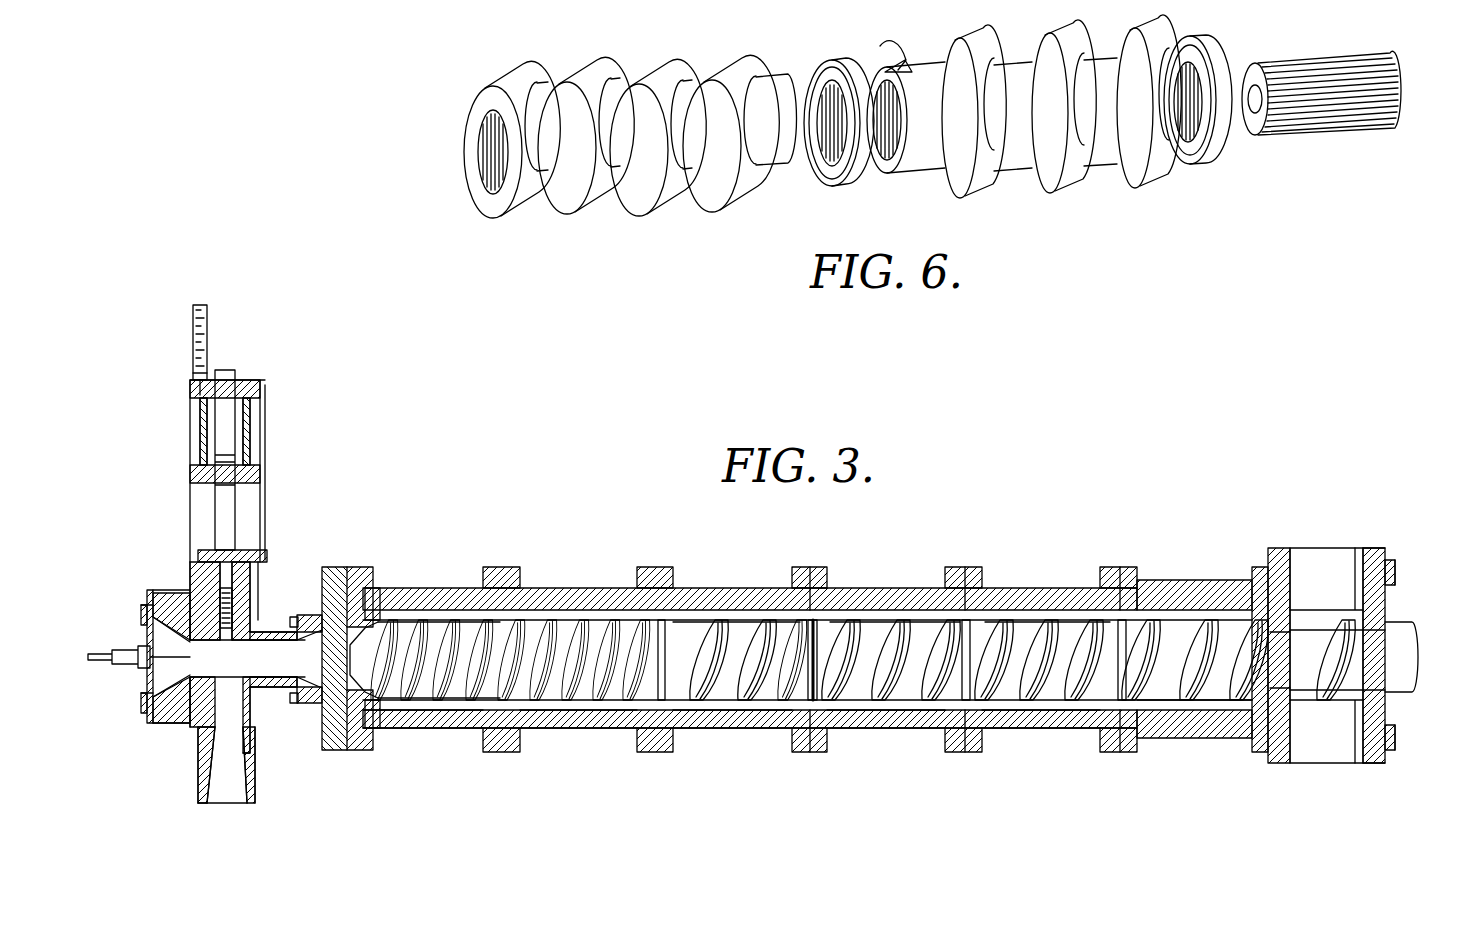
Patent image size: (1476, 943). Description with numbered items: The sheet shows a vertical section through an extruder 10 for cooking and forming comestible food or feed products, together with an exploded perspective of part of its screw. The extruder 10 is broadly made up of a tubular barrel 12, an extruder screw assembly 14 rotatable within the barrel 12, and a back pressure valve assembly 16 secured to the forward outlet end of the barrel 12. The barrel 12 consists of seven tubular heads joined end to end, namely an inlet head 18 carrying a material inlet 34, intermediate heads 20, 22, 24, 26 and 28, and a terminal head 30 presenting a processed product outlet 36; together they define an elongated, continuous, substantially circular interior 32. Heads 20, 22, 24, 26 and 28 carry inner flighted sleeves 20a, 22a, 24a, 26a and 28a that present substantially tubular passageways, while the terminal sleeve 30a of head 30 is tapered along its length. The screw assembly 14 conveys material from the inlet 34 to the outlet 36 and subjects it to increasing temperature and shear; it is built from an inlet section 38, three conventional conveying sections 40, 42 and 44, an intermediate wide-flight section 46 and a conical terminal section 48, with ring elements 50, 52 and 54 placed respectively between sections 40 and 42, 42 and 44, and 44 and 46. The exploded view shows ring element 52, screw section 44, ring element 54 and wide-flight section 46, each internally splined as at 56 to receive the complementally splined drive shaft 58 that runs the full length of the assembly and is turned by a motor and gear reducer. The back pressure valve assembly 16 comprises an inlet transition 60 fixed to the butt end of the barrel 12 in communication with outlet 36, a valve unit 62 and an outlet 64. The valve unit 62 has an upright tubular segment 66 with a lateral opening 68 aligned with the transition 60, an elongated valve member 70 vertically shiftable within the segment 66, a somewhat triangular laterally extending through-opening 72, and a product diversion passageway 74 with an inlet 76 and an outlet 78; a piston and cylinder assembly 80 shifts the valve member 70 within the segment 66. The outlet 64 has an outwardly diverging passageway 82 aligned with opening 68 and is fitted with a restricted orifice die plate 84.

In FIG. 3, the extruder 10 is at (1243, 488).
In FIG. 3, the tubular barrel 12 is at (1114, 533).
In FIG. 3, the extruder screw assembly 14 is at (1024, 600).
In FIG. 3, the back pressure valve assembly 16 is at (302, 468).
In FIG. 3, the inlet head 18 is at (1318, 725).
In FIG. 3, the tubular head 20 is at (1228, 738).
In FIG. 3, the inner flighted sleeve 20a is at (1150, 720).
In FIG. 3, the tubular head 22 is at (1067, 730).
In FIG. 3, the inner flighted sleeve 22a is at (1035, 712).
In FIG. 3, the tubular head 24 is at (895, 722).
In FIG. 3, the inner flighted sleeve 24a is at (866, 712).
In FIG. 3, the tubular head 26 is at (765, 722).
In FIG. 3, the inner flighted sleeve 26a is at (724, 712).
In FIG. 3, the tubular head 28 is at (610, 728).
In FIG. 3, the inner flighted sleeve 28a is at (552, 712).
In FIG. 3, the terminal head 30 is at (455, 728).
In FIG. 3, the terminal sleeve 30a is at (380, 712).
In FIG. 3, the interior 32 is at (1235, 605).
In FIG. 3, the material inlet 34 is at (1340, 552).
In FIG. 3, the processed product outlet 36 is at (340, 645).
In FIG. 3, the inlet section 38 is at (1305, 635).
In FIG. 3, the conveying section 40 is at (1057, 640).
In FIG. 3, the conveying section 42 is at (918, 640).
In FIG. 6, the conveying section 44 is at (1017, 78).
In FIG. 3, the conveying section 44 is at (728, 640).
In FIG. 6, the intermediate wide-flight section 46 is at (602, 65).
In FIG. 3, the intermediate wide-flight section 46 is at (572, 635).
In FIG. 3, the conical terminal or outlet section 48 is at (405, 640).
In FIG. 3, the ring element 50 is at (966, 680).
In FIG. 6, the ring element 52 is at (850, 175).
In FIG. 3, the ring element 52 is at (828, 635).
In FIG. 6, the ring element 54 is at (1212, 52).
In FIG. 6, the internal splines 56 is at (1180, 137).
In FIG. 6, the splined drive shaft 58 is at (1367, 120).
In FIG. 3, the splined drive shaft 58 is at (1402, 648).
In FIG. 3, the inlet transition 60 is at (280, 685).
In FIG. 3, the valve unit 62 is at (318, 572).
In FIG. 3, the outlet 64 is at (170, 590).
In FIG. 3, the upright tubular segment 66 is at (296, 612).
In FIG. 3, the lateral opening 68 is at (238, 655).
In FIG. 3, the valve member 70 is at (212, 560).
In FIG. 3, the through-opening 72 is at (205, 657).
In FIG. 3, the product diversion passageway 74 is at (226, 800).
In FIG. 3, the inlet 76 is at (248, 728).
In FIG. 3, the outlet 78 is at (204, 806).
In FIG. 3, the piston and cylinder assembly 80 is at (170, 380).
In FIG. 3, the outwardly diverging passageway 82 is at (165, 683).
In FIG. 3, the restricted orifice die plate 84 is at (140, 635).